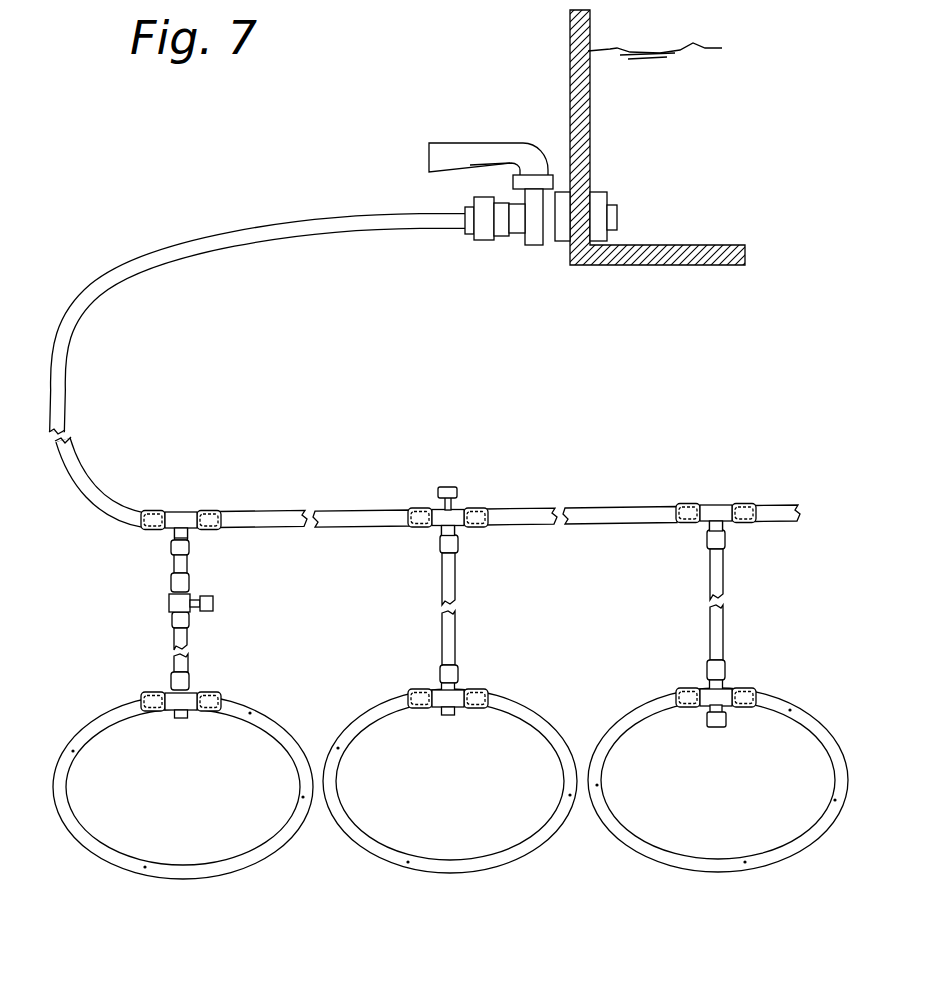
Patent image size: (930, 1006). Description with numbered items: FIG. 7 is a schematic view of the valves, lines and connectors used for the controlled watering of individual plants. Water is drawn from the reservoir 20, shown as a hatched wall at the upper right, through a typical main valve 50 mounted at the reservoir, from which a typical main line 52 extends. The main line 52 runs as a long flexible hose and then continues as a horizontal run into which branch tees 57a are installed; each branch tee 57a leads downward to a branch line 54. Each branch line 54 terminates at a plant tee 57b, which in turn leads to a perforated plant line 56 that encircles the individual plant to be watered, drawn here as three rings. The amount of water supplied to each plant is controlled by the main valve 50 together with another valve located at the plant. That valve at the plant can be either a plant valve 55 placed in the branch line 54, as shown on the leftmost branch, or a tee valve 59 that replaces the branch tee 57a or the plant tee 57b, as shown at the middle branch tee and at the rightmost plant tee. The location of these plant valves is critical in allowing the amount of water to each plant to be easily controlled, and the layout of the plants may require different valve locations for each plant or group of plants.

The reservoir 20 is at (578, 96).
The main valve 50 is at (480, 150).
The main line 52 is at (200, 243).
The branch line 54 is at (172, 562).
The plant valve 55 is at (170, 603).
The perforated plant line 56 is at (140, 868).
The branch tee 57a is at (175, 518).
The plant tee 57b is at (174, 712).
The tee valve 59 is at (452, 511).